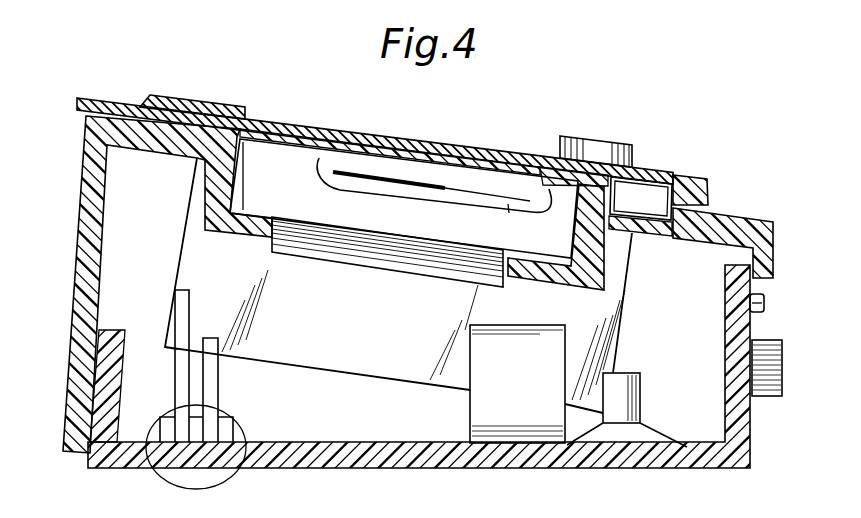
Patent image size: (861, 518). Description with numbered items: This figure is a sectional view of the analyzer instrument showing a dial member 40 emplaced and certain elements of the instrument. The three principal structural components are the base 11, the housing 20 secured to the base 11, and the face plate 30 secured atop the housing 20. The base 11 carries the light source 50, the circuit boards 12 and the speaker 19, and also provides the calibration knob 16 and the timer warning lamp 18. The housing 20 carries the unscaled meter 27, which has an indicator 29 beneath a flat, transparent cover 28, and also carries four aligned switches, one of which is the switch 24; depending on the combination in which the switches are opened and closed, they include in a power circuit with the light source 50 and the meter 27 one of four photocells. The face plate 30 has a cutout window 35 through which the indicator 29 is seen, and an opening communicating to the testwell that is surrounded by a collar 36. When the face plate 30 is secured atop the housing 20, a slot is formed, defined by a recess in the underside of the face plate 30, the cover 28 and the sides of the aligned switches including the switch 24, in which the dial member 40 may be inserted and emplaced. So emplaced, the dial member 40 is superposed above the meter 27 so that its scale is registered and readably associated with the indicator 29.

The base 11 is at (122, 460).
The circuit boards 12 is at (228, 468).
The calibration knob 16 is at (772, 378).
The timer warning lamp 18 is at (764, 303).
The speaker 19 is at (647, 440).
The housing 20 is at (80, 270).
The switch 24 is at (653, 184).
The unscaled meter 27 is at (290, 173).
The transparent cover 28 is at (362, 162).
The indicator 29 is at (443, 192).
The face plate 30 is at (703, 191).
The cutout window 35 is at (250, 110).
The collar 36 is at (589, 145).
The dial member 40 is at (100, 106).
The light source 50 is at (513, 433).